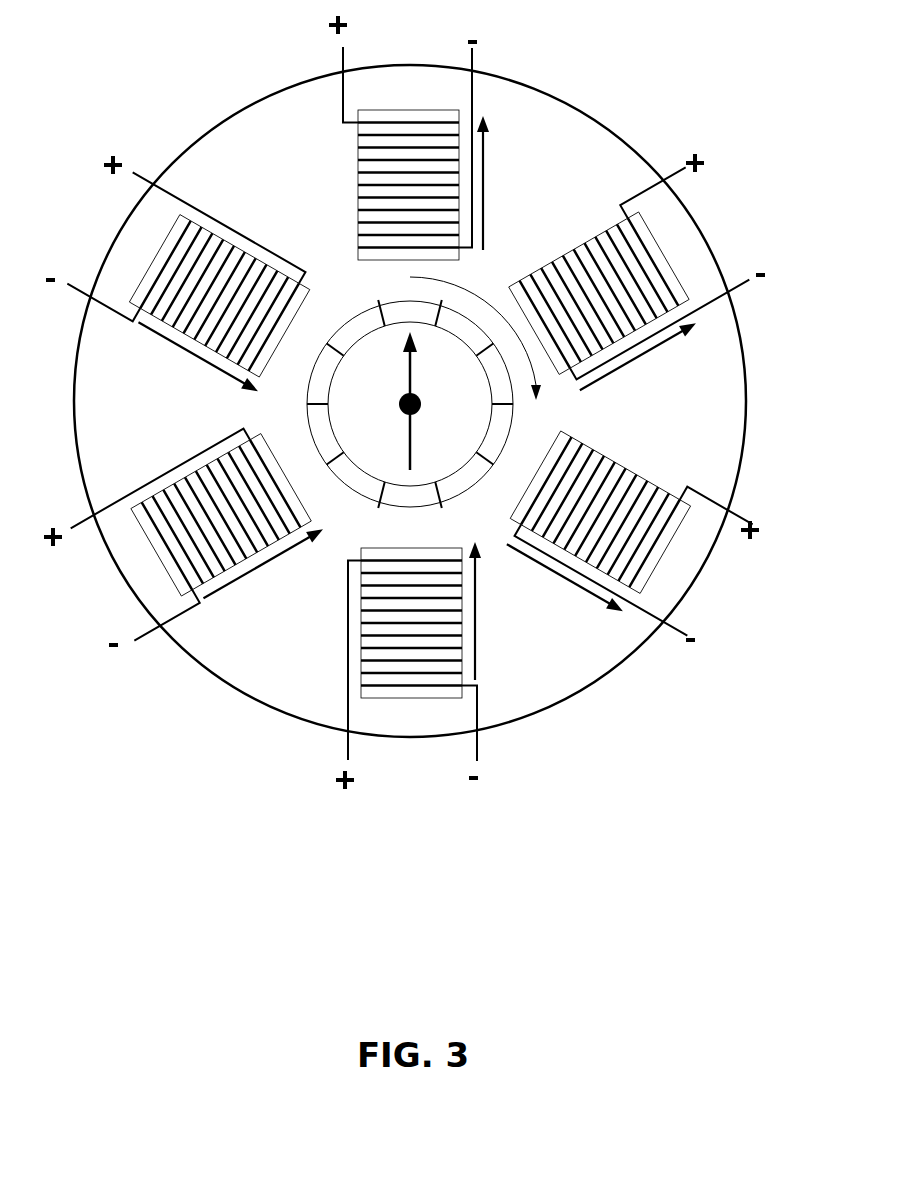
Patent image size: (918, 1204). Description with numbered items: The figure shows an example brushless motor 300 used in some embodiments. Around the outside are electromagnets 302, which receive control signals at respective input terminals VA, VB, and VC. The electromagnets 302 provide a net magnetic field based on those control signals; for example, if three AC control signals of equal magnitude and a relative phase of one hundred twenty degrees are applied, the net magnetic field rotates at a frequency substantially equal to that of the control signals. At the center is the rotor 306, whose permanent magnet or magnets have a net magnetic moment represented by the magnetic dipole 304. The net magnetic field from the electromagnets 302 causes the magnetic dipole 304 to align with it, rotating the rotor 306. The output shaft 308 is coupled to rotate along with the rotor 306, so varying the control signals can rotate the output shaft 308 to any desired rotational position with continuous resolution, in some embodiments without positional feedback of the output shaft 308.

The brushless motor 300 is at (668, 51).
The electromagnets 302 is at (404, 408).
The magnetic dipole 304 is at (414, 420).
The rotor 306 is at (424, 388).
The output shaft 308 is at (418, 396).